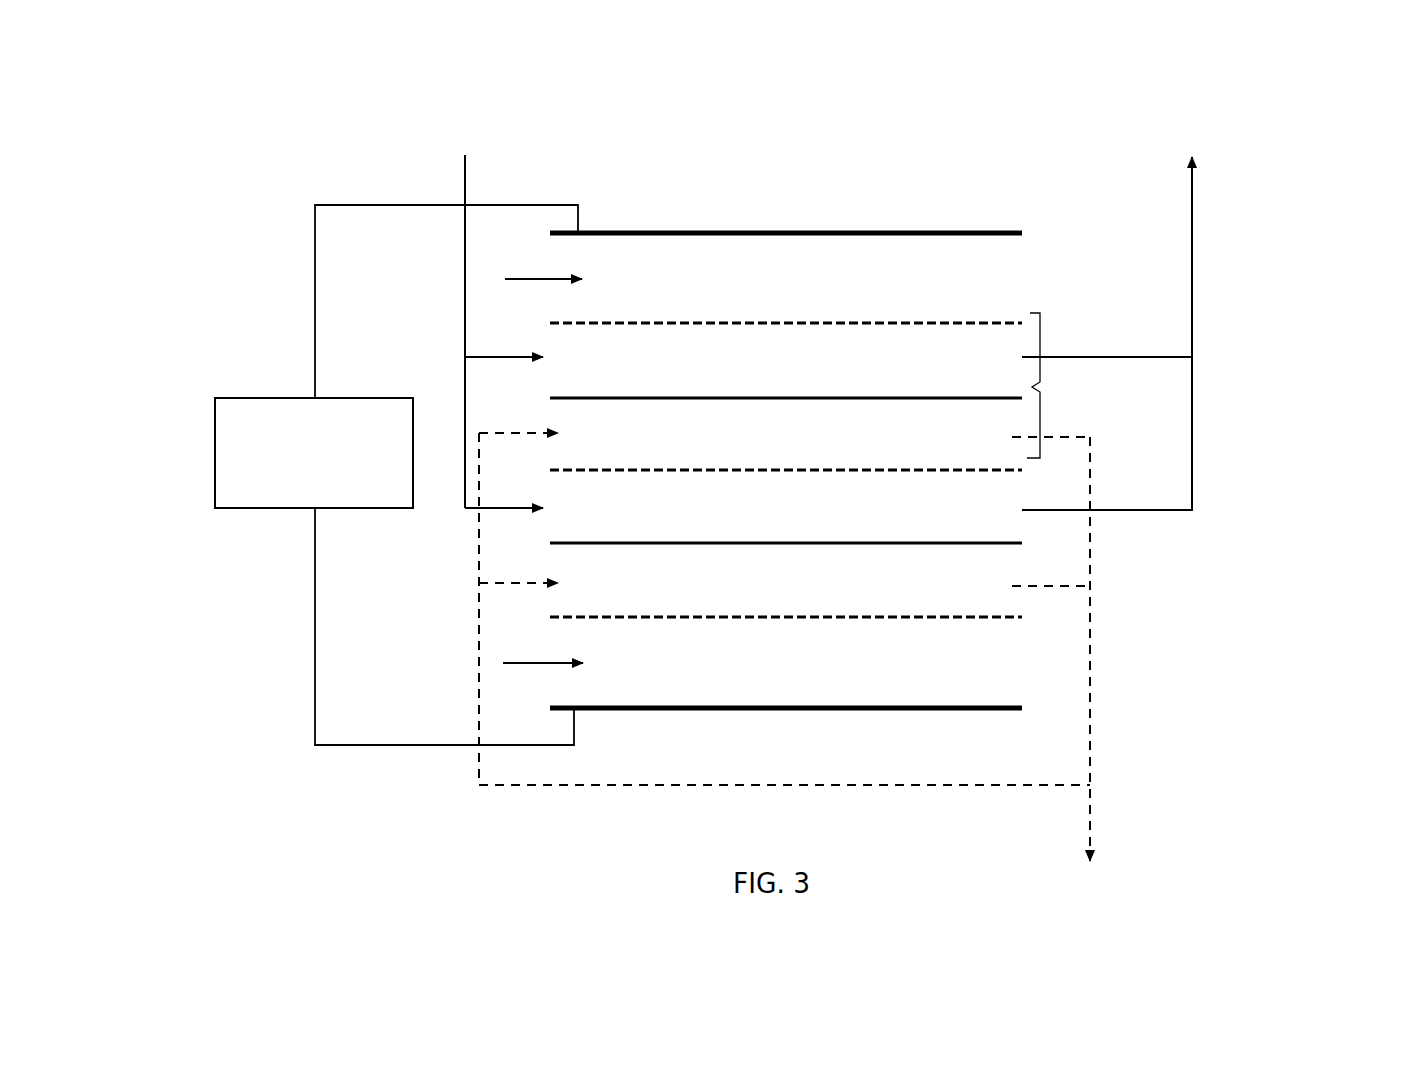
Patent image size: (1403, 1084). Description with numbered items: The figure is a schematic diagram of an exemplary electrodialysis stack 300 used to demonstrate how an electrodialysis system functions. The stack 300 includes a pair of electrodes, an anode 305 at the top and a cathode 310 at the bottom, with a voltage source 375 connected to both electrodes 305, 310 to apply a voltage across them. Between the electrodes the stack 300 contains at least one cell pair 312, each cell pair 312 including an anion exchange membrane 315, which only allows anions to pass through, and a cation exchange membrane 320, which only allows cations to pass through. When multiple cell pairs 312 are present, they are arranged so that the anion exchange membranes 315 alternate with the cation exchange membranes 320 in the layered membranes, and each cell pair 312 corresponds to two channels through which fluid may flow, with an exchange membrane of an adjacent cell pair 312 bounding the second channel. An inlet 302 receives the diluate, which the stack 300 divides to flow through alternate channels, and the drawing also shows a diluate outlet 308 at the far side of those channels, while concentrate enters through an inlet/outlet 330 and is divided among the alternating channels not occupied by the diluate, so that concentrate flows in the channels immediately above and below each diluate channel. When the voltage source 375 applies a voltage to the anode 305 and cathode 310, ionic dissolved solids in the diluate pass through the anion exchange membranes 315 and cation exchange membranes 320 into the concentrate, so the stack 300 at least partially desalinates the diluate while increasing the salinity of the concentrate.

The electrodialysis stack 300 is at (430, 816).
The inlet 302 is at (465, 172).
The anode 305 is at (820, 212).
The diluate outlet 308 is at (1182, 326).
The cathode 310 is at (817, 713).
The cell pair 312 is at (1032, 387).
The anion exchange membrane 315 is at (995, 322).
The cation exchange membrane 320 is at (960, 395).
The inlet/outlet 330 is at (1090, 828).
The voltage source 375 is at (396, 475).